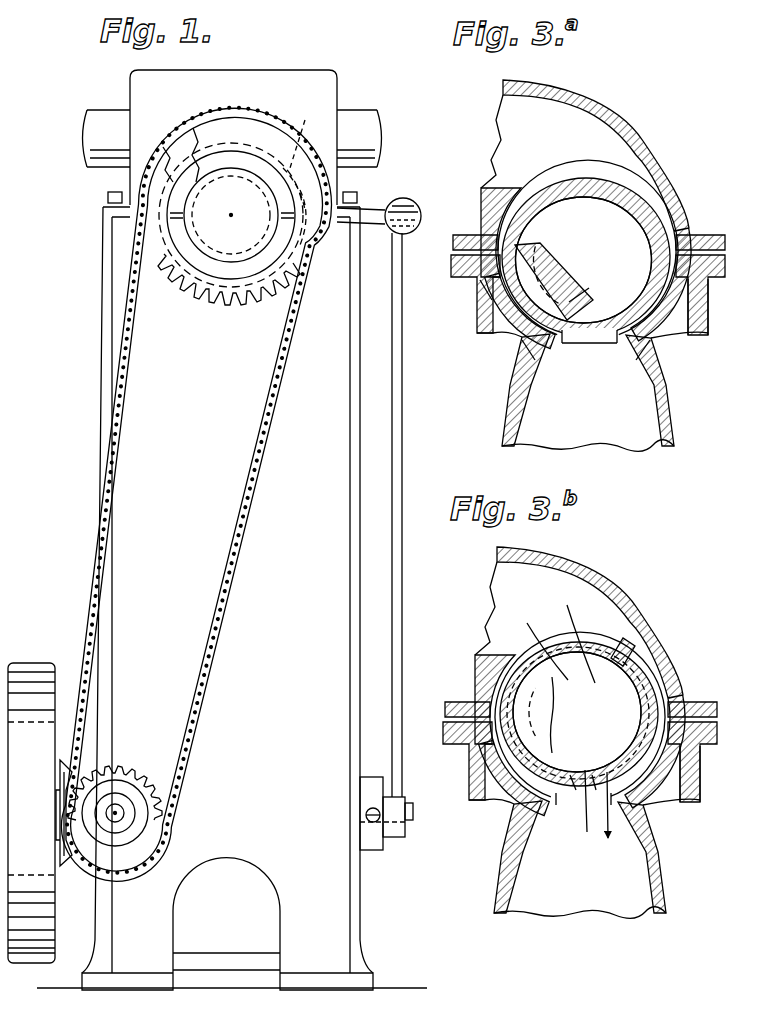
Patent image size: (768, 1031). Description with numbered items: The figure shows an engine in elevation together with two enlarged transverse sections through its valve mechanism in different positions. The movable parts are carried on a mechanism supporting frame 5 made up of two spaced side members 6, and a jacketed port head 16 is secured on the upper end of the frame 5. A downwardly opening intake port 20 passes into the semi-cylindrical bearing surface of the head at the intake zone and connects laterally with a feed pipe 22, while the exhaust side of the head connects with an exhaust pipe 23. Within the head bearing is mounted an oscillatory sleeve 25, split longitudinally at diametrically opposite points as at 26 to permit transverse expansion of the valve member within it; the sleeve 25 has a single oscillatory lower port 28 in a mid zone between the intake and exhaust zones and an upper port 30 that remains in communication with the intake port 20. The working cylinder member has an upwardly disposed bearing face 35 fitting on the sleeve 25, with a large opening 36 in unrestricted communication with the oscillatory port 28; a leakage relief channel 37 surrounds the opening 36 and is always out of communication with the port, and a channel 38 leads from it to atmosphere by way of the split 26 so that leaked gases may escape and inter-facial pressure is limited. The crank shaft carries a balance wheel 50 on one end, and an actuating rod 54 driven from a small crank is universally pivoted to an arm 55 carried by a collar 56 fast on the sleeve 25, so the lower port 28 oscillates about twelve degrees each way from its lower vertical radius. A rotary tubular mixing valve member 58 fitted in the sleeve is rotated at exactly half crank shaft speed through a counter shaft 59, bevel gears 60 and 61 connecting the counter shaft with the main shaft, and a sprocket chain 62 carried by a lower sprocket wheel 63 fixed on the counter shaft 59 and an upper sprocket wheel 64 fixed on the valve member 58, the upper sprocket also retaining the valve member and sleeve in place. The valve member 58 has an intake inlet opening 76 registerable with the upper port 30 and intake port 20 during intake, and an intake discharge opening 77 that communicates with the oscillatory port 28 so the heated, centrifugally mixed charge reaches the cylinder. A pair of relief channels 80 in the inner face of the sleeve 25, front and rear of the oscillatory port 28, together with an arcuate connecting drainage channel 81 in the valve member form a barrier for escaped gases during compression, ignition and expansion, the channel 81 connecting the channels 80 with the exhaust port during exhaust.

In FIG. 1, the mechanism supporting frame 5 is at (362, 488).
In FIG. 1, the side members 6 is at (232, 856).
In FIG. 1, the jacketed port head 16 is at (233, 137).
In FIG. 3A, the intake port 20 is at (572, 115).
In FIG. 3B, the intake port 20 is at (595, 600).
In FIG. 1, the feed pipe 22 is at (100, 118).
In FIG. 1, the exhaust pipe 23 is at (355, 118).
In FIG. 1, the oscillatory sleeve 25 is at (197, 173).
In FIG. 3A, the oscillatory sleeve 25 is at (500, 283).
In FIG. 3A, the split 26 is at (690, 233).
In FIG. 3B, the split 26 is at (683, 700).
In FIG. 3A, the oscillatory lower port 28 is at (585, 346).
In FIG. 3A, the upper port 30 is at (600, 170).
In FIG. 3B, the upper port 30 is at (603, 640).
In FIG. 3A, the bearing face 35 is at (520, 340).
In FIG. 3A, the large opening 36 is at (557, 350).
In FIG. 3A, the leakage relief channel 37 is at (655, 355).
In FIG. 3B, the leakage relief channel 37 is at (652, 815).
In FIG. 3A, the channel 38 is at (680, 335).
In FIG. 3B, the channel 38 is at (690, 768).
In FIG. 1, the balance wheel 50 is at (32, 672).
In FIG. 1, the actuating rod 54 is at (398, 552).
In FIG. 1, the arm 55 is at (388, 205).
In FIG. 1, the collar 56 is at (237, 192).
In FIG. 1, the rotary tubular mixing valve member 58 is at (231, 215).
In FIG. 3A, the rotary tubular mixing valve member 58 is at (669, 195).
In FIG. 1, the counter shaft 59 is at (118, 808).
In FIG. 1, the bevel gear 60 is at (65, 862).
In FIG. 1, the bevel gear 61 is at (128, 865).
In FIG. 1, the sprocket chain 62 is at (205, 668).
In FIG. 1, the lower sprocket wheel 63 is at (155, 815).
In FIG. 1, the upper sprocket wheel 64 is at (235, 305).
In FIG. 3A, the intake inlet opening 76 is at (545, 200).
In FIG. 3B, the intake inlet opening 76 is at (630, 645).
In FIG. 3A, the intake discharge opening 77 is at (640, 300).
In FIG. 3B, the intake discharge opening 77 is at (577, 721).
In FIG. 3A, the relief channels 80 is at (575, 296).
In FIG. 3B, the relief channels 80 is at (615, 780).
In FIG. 3A, the arcuate connecting drainage channel 81 is at (478, 335).
In FIG. 3B, the arcuate connecting drainage channel 81 is at (480, 695).